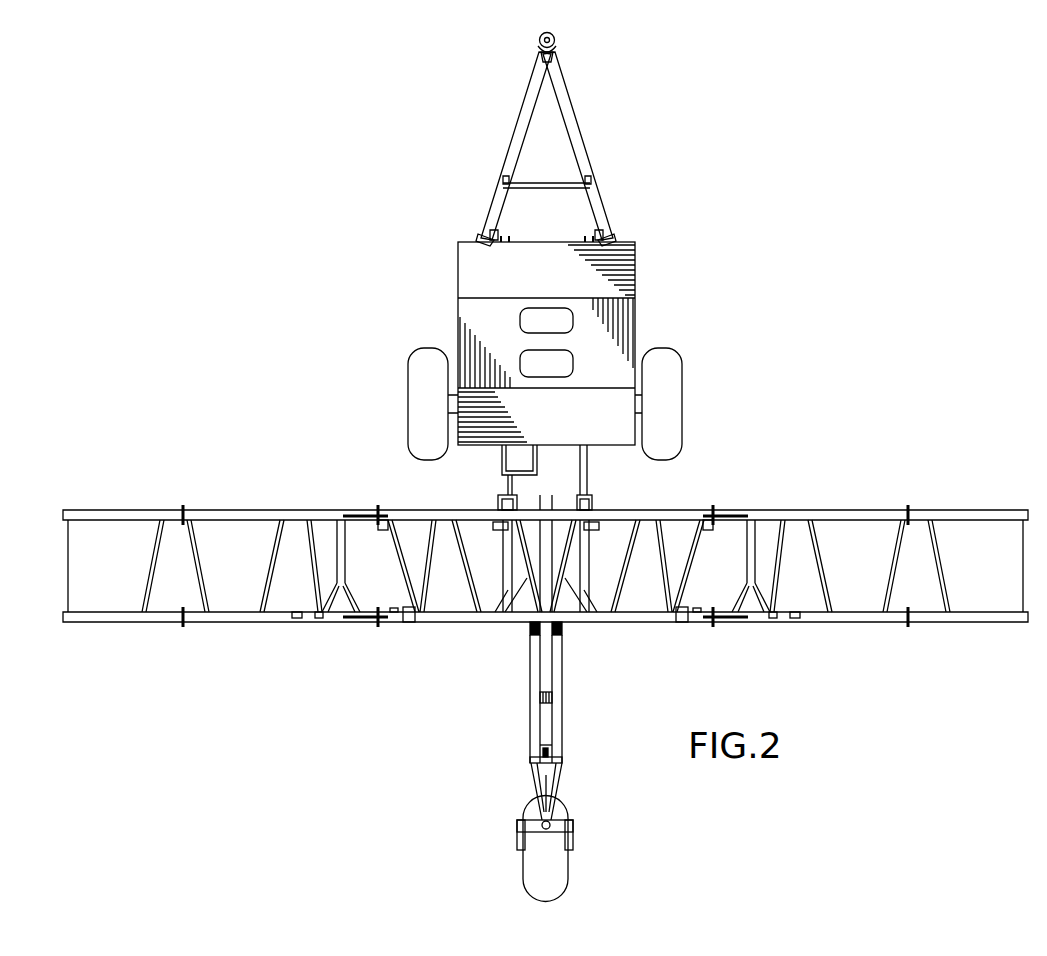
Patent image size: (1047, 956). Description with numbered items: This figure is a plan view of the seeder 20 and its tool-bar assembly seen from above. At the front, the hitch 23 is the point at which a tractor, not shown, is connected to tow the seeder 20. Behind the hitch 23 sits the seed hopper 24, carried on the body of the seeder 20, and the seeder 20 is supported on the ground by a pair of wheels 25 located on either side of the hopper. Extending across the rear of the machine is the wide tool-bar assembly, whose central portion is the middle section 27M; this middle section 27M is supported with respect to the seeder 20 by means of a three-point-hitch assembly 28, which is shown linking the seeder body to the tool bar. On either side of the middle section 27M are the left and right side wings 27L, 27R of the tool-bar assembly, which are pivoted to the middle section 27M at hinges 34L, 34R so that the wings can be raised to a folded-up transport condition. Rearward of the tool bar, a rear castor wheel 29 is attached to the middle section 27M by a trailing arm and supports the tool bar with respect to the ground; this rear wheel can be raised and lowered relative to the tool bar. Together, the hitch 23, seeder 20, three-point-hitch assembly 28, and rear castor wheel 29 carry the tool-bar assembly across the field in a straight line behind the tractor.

The seeder 20 is at (745, 313).
The hitch 23 is at (556, 40).
The seed hopper 24 is at (633, 275).
The wheels 25 is at (673, 390).
The left side wing 27L is at (216, 510).
The middle section 27M is at (465, 510).
The right side wing 27R is at (864, 510).
The three-point-hitch assembly 28 is at (588, 468).
The rear castor wheel 29 is at (565, 860).
The left hinge 34L is at (378, 510).
The right hinge 34R is at (713, 510).